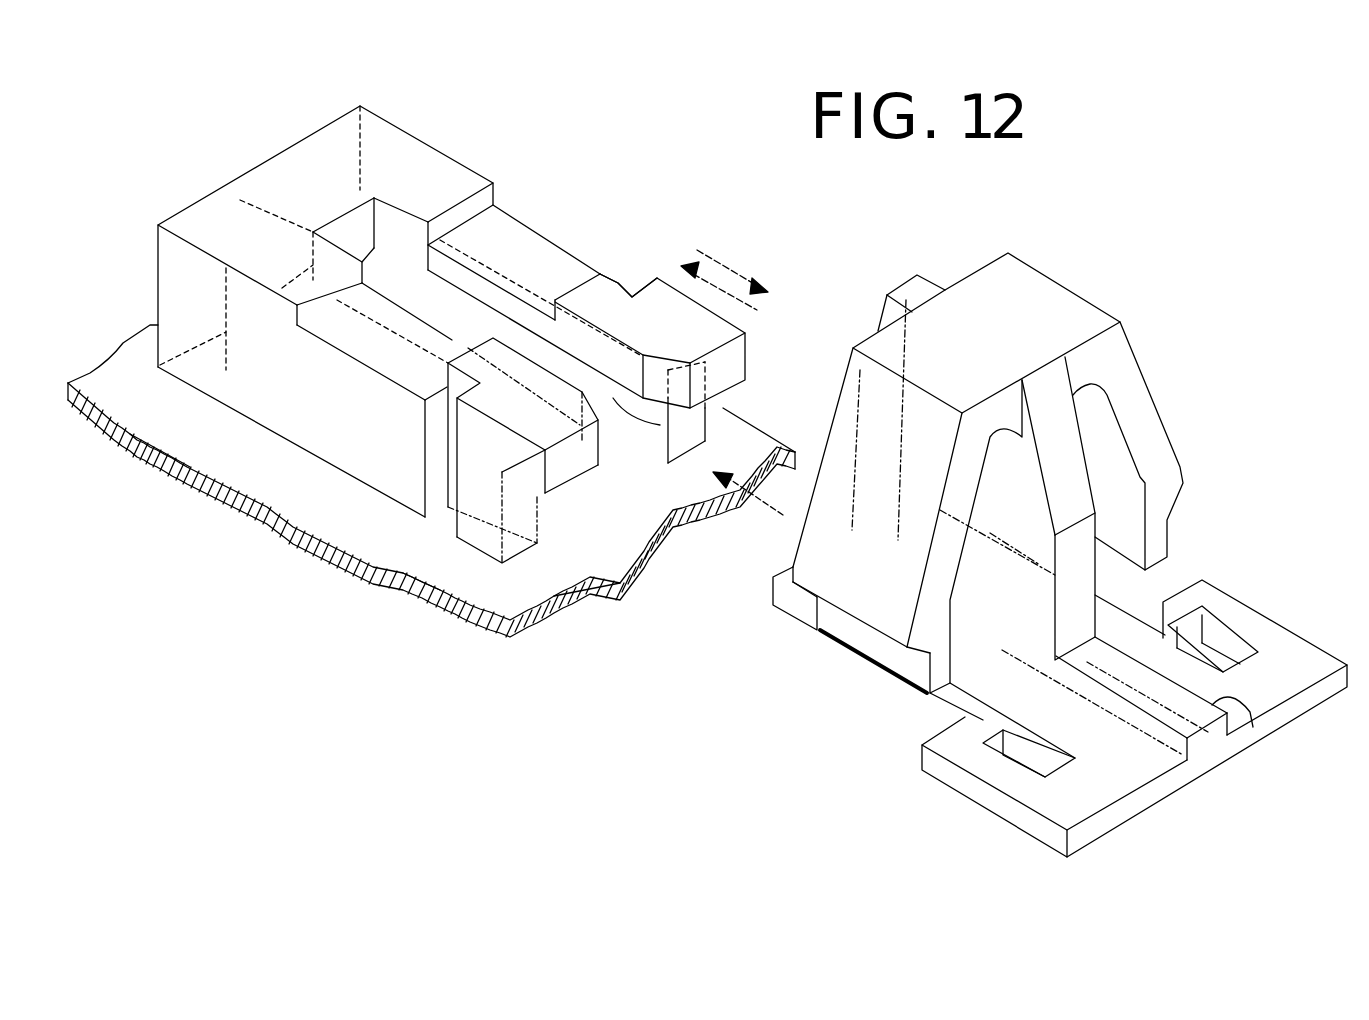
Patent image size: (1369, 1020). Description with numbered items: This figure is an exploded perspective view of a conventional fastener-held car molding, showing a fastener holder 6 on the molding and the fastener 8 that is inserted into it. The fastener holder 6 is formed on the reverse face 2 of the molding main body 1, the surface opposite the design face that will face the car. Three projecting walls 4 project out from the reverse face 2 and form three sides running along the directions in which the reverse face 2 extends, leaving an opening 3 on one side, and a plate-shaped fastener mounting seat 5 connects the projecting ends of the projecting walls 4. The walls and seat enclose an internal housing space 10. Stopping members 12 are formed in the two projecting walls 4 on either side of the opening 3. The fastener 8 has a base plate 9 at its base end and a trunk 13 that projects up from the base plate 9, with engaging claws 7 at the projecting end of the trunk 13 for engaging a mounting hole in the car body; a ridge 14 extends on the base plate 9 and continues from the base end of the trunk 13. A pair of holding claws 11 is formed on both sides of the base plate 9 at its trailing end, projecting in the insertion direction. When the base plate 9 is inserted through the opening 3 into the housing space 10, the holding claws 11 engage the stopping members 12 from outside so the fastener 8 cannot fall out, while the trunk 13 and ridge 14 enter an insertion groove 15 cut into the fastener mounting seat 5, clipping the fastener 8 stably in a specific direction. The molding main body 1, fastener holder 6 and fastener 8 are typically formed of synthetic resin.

The molding main body 1 is at (90, 373).
The reverse face 2 is at (190, 437).
The opening 3 is at (588, 503).
The projecting walls 4 is at (218, 213).
The fastener mounting seat 5 is at (493, 283).
The fastener holder 6 is at (462, 165).
The engaging claws 7 is at (1173, 452).
The fastener 8 is at (878, 672).
The base plate 9 is at (1165, 762).
The housing space 10 is at (390, 260).
The holding claws 11 is at (1248, 611).
The stopping members 12 is at (643, 273).
The trunk 13 is at (1100, 580).
The ridge 14 is at (1253, 708).
The insertion groove 15 is at (703, 418).